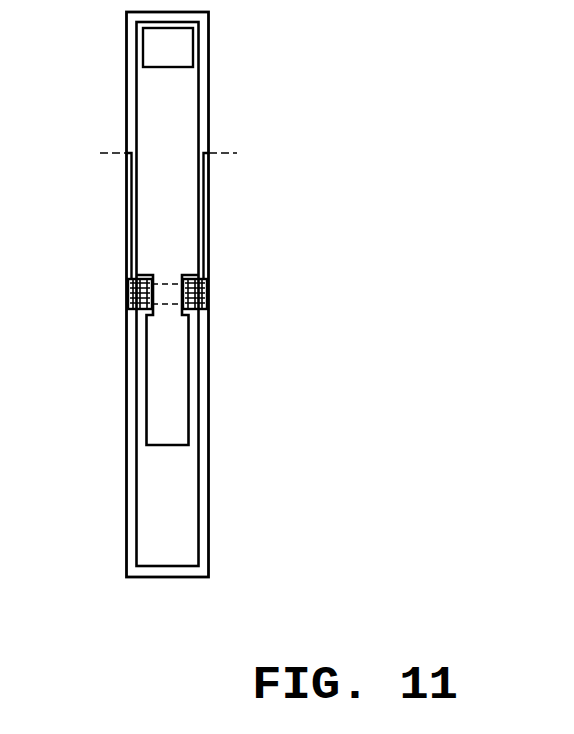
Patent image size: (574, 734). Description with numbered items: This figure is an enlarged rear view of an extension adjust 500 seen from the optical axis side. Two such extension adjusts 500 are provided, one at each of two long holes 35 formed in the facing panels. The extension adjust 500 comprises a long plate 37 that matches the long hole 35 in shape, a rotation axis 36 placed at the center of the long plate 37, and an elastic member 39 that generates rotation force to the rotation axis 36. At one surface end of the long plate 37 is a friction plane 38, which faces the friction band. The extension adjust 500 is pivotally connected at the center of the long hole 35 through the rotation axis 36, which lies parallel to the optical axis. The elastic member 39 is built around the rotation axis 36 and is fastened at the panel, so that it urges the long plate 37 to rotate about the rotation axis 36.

The extension adjust 500 is at (104, 195).
The long hole 35 is at (210, 515).
The rotation axis 36 is at (168, 291).
The long plate 37 is at (167, 515).
The friction plane 38 is at (167, 47).
The elastic member 39 is at (129, 304).